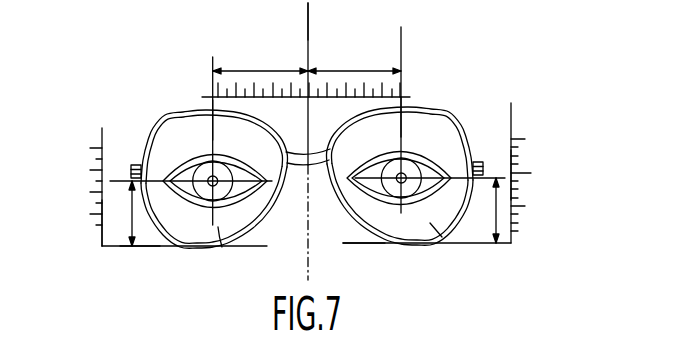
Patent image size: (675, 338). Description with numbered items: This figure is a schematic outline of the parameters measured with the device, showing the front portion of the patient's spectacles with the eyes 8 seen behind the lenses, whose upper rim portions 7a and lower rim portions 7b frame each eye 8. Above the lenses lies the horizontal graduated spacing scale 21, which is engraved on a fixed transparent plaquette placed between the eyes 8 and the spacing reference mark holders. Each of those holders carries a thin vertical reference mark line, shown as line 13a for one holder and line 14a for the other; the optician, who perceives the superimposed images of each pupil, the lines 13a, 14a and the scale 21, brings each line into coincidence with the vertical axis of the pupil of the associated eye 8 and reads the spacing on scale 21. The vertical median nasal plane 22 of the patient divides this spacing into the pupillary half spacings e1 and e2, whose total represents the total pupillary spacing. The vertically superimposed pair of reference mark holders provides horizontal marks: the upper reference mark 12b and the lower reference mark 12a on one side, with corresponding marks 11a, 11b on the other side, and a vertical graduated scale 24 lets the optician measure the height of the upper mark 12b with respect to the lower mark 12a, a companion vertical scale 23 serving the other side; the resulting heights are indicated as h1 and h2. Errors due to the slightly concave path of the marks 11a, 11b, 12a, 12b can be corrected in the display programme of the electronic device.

The upper rim of spectacle frame 7a is at (163, 120).
The lower rim of spectacle frame 7b is at (222, 247).
The eyes 8 is at (220, 170).
The reference mark 11a is at (140, 247).
The reference mark 11b is at (102, 188).
The lower reference mark 12a is at (365, 243).
The upper reference mark 12b is at (496, 178).
The reference mark line 13a is at (210, 133).
The reference mark line 14a is at (404, 130).
The graduated spacing scale 21 is at (300, 97).
The median nasal plane 22 is at (307, 33).
The left height scale 23 is at (102, 223).
The vertical graduated scale 24 is at (512, 172).
The pupillary half spacing e1 is at (260, 51).
The pupillary half spacing e2 is at (354, 51).
The left pupil height h1 is at (132, 232).
The right pupil height h2 is at (496, 215).